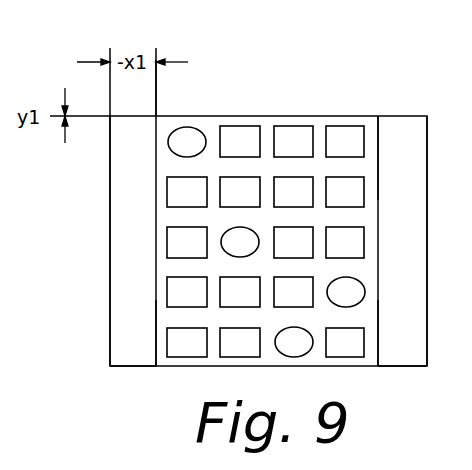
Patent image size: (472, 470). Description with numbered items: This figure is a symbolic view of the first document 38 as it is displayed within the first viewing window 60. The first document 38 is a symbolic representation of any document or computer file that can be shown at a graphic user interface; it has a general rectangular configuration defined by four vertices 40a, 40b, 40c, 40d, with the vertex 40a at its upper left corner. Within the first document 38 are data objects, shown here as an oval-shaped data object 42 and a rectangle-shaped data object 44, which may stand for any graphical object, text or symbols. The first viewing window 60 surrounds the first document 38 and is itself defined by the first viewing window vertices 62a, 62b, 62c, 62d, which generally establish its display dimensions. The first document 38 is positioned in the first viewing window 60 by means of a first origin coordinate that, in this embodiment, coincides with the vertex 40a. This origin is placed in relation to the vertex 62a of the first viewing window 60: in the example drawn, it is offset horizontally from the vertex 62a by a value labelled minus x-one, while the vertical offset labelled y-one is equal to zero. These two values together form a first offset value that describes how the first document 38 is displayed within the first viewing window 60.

The first document 38 is at (331, 115).
The vertex 40a is at (157, 117).
The vertex 40b is at (378, 115).
The vertex 40c is at (378, 366).
The vertex 40d is at (156, 366).
The data object 42 is at (190, 134).
The data object 44 is at (238, 130).
The first viewing window 60 is at (110, 242).
The first viewing window vertex 62a is at (110, 108).
The first viewing window vertex 62b is at (427, 115).
The first viewing window vertex 62c is at (427, 366).
The first viewing window vertex 62d is at (110, 366).